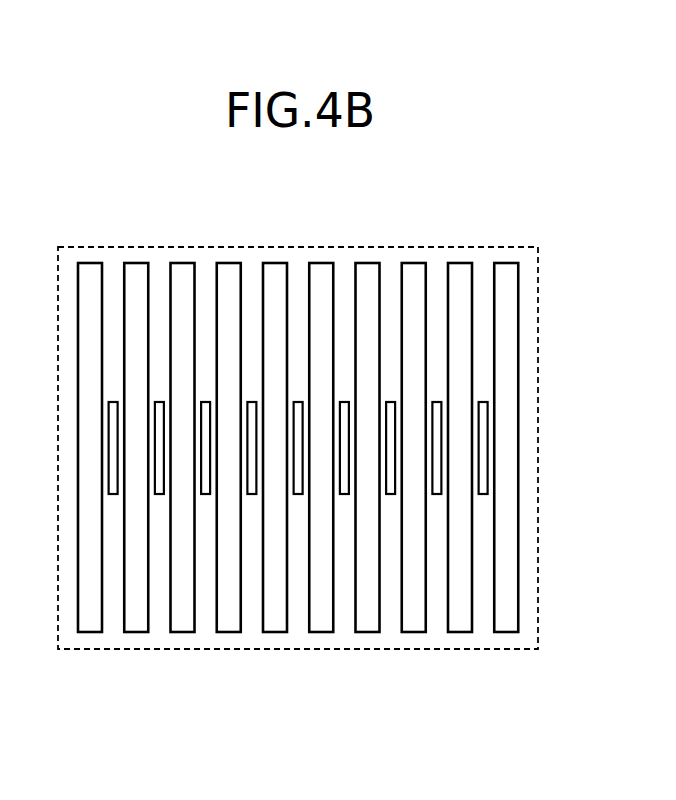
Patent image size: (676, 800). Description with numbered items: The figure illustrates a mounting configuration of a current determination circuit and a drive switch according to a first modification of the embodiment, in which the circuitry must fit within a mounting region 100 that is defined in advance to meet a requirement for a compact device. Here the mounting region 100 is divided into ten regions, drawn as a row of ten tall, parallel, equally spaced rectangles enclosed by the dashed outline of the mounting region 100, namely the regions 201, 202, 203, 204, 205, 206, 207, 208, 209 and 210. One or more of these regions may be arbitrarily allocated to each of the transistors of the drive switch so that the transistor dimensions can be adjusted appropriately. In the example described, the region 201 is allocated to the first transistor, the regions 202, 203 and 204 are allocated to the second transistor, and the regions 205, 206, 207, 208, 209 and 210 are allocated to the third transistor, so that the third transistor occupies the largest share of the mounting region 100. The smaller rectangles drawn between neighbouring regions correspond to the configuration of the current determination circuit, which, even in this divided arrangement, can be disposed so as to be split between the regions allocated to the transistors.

The mounting region 100 is at (503, 247).
The region 201 is at (91, 624).
The region 202 is at (137, 624).
The region 203 is at (184, 624).
The region 204 is at (230, 624).
The region 205 is at (276, 624).
The region 206 is at (322, 624).
The region 207 is at (368, 624).
The region 208 is at (415, 624).
The region 209 is at (461, 624).
The region 210 is at (507, 624).